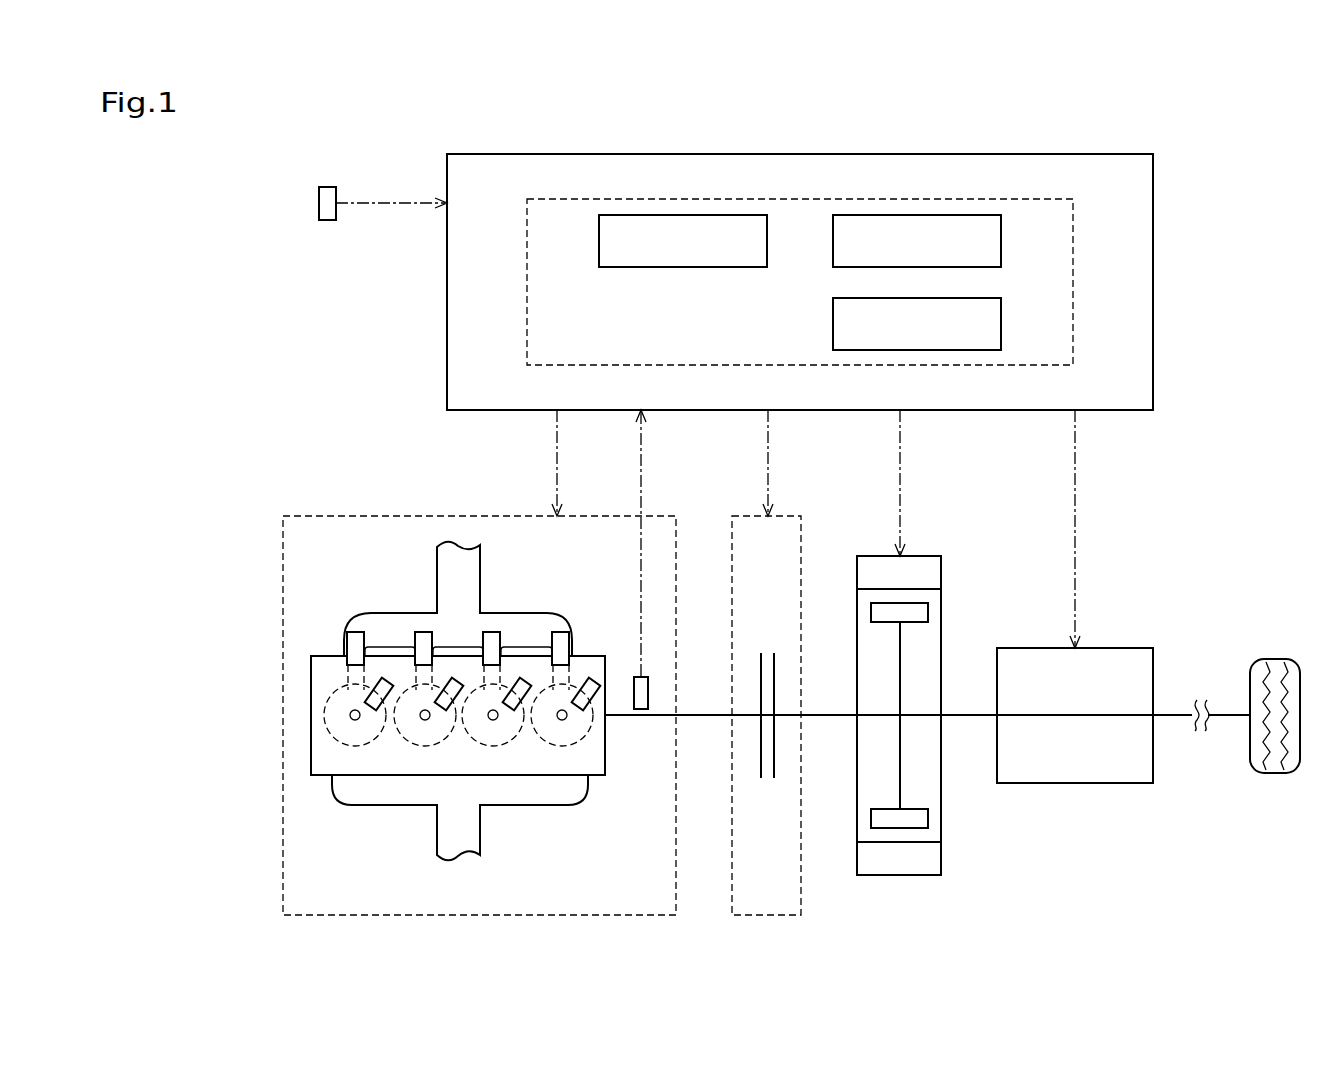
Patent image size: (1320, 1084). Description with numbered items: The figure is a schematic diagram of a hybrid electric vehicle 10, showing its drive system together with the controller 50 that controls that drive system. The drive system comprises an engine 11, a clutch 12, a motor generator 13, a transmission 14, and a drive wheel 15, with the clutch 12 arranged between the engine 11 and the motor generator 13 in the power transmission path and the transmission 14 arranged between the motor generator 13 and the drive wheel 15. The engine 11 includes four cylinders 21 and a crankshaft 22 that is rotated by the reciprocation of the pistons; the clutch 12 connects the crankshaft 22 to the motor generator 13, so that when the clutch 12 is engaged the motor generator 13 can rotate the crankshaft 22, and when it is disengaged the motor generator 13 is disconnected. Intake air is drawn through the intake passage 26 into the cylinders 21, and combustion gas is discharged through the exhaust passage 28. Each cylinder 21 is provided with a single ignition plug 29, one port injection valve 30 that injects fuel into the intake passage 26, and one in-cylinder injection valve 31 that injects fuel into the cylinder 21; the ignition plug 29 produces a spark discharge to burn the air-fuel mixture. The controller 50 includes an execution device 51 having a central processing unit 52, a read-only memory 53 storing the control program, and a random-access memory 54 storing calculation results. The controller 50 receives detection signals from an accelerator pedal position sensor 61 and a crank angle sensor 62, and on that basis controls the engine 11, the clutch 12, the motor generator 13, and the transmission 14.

The hybrid electric vehicle 10 is at (1210, 846).
The engine 11 is at (320, 515).
The clutch 12 is at (750, 515).
The motor generator 13 is at (945, 540).
The transmission 14 is at (1125, 648).
The drive wheel 15 is at (1272, 659).
The cylinder 21 is at (564, 782).
The crankshaft 22 is at (652, 722).
The intake passage 26 is at (437, 560).
The exhaust passage 28 is at (480, 849).
The ignition plug 29 is at (360, 718).
The port injection valve 30 is at (423, 632).
The in-cylinder injection valve 31 is at (442, 680).
The controller 50 is at (447, 284).
The execution device 51 is at (527, 330).
The central processing unit 52 is at (769, 241).
The read-only memory 53 is at (1002, 241).
The random-access memory 54 is at (1002, 324).
The accelerator pedal position sensor 61 is at (319, 203).
The crank angle sensor 62 is at (648, 692).